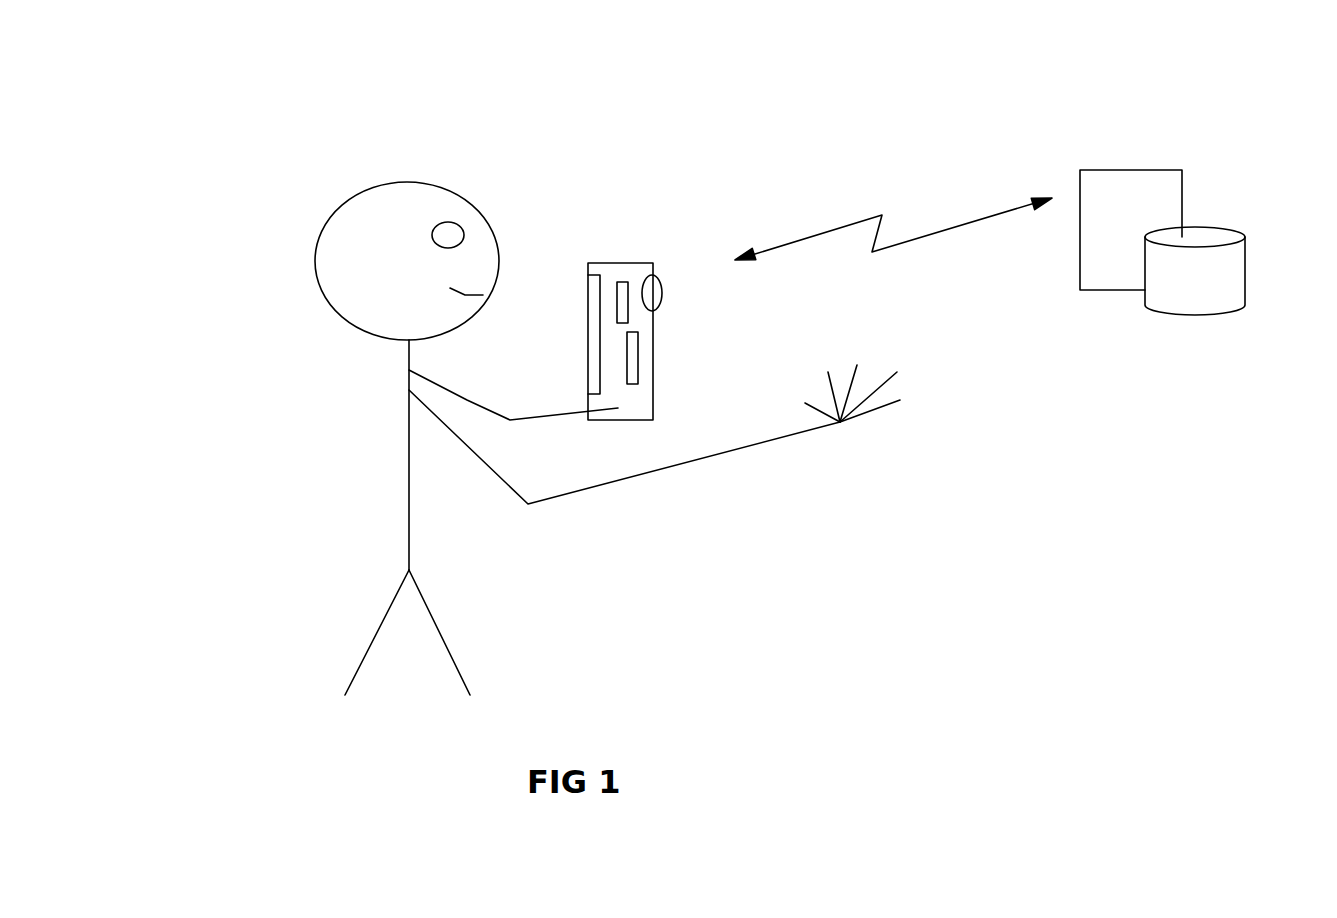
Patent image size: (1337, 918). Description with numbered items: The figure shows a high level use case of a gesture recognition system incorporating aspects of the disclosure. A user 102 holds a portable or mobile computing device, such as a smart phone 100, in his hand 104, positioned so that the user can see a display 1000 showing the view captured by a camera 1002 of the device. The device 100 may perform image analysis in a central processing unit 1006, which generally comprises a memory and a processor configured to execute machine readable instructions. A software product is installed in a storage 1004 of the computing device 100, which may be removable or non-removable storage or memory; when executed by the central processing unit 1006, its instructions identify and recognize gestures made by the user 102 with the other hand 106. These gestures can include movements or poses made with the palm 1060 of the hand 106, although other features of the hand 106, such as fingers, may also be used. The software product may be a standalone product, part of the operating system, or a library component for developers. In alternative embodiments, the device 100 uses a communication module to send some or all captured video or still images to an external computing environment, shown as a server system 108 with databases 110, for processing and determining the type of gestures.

The smart phone 100 is at (786, 238).
The user 102 is at (340, 250).
The hand 104 is at (467, 402).
The other hand 106 is at (565, 510).
The server system 108 is at (1140, 188).
The databases 110 is at (1232, 282).
The display 1000 is at (587, 323).
The camera 1002 is at (628, 348).
The storage 1004 is at (626, 283).
The central processing unit 1006 is at (660, 280).
The palm 1060 is at (857, 427).